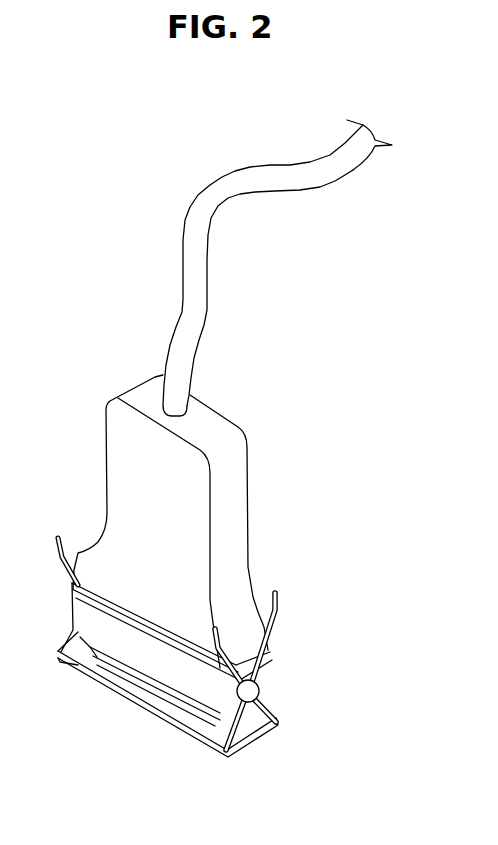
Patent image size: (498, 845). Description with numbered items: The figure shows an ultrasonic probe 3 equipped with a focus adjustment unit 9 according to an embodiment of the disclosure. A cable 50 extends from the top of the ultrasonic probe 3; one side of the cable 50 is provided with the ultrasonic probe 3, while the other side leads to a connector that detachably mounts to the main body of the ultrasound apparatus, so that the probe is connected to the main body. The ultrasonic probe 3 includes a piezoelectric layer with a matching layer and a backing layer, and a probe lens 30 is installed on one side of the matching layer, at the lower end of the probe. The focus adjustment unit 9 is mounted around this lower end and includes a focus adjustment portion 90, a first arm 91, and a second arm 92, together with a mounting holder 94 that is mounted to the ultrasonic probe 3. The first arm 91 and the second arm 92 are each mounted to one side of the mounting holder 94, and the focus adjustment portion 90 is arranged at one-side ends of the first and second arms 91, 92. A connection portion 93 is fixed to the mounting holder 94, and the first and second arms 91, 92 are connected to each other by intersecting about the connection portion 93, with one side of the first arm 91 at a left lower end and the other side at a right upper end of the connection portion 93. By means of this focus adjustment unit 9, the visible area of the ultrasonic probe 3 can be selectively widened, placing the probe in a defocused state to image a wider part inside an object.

The cable 50 is at (192, 232).
The ultrasonic probe 3 is at (233, 453).
The probe lens 30 is at (95, 658).
The mounting holder 94 is at (148, 666).
The focus adjustment portion 90 is at (190, 735).
The focus adjustment unit 9 is at (263, 688).
The first arm 91 is at (279, 624).
The second arm 92 is at (210, 637).
The connection portion 93 is at (250, 732).